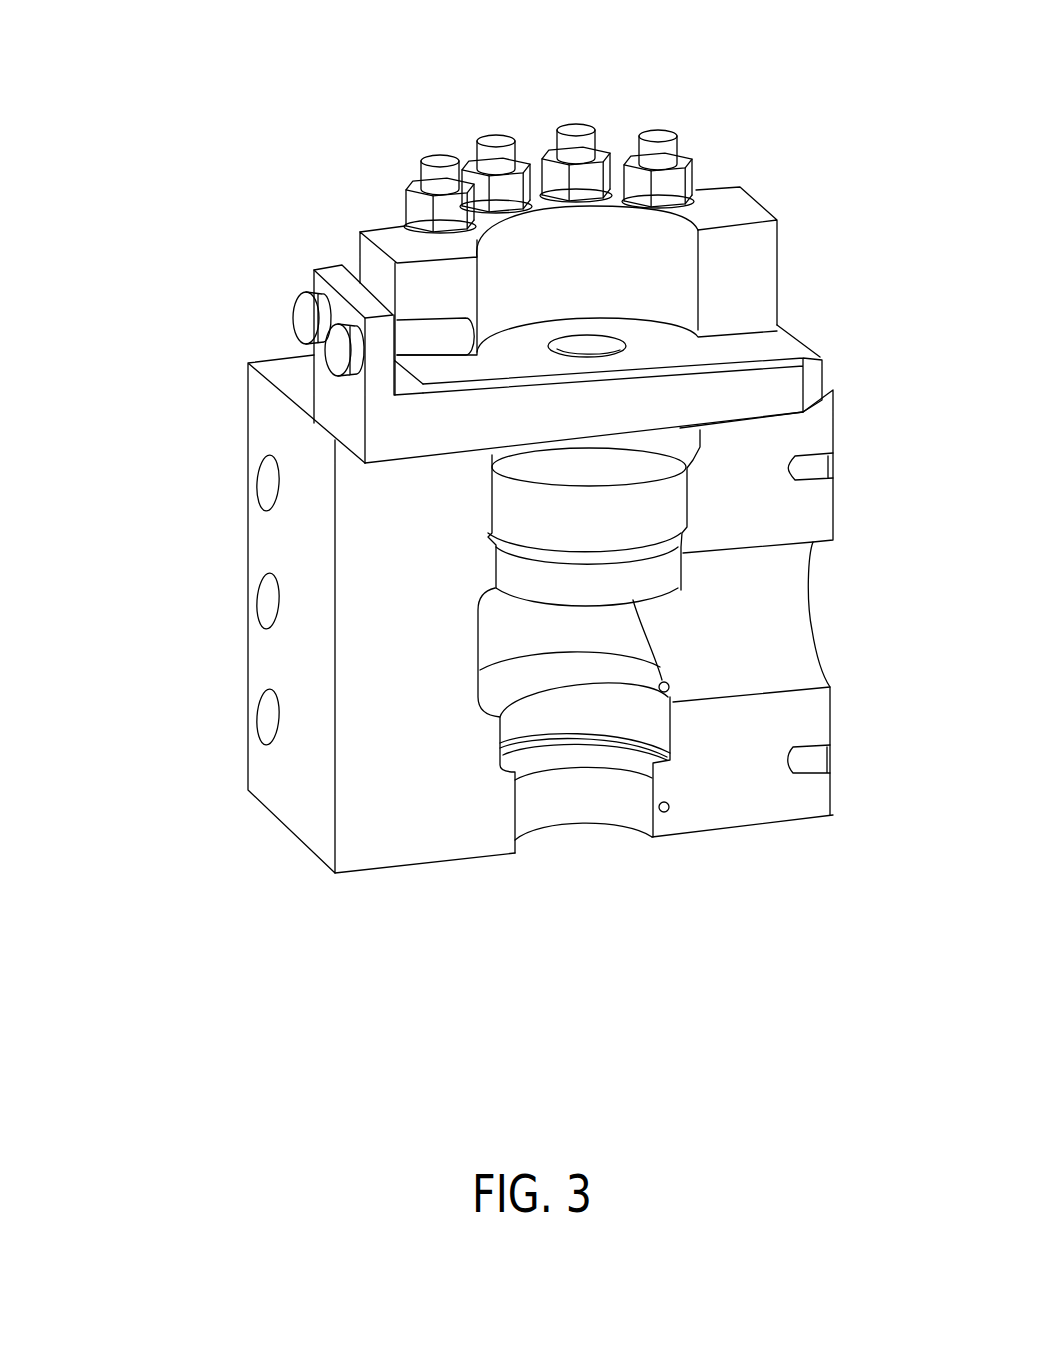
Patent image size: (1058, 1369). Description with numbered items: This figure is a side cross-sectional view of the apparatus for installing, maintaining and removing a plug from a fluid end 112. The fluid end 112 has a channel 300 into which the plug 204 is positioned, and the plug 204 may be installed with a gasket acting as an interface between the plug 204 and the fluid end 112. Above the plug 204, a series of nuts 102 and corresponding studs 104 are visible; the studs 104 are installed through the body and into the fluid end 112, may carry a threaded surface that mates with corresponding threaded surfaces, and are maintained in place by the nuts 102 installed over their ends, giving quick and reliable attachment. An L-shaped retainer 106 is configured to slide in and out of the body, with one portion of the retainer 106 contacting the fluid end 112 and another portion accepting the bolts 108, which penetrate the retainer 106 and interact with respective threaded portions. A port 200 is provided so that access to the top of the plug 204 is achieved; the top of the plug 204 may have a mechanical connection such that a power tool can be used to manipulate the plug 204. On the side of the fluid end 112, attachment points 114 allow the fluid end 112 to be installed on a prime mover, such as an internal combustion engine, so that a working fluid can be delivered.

The nut 102 is at (405, 190).
The stud 104 is at (490, 137).
The retainer 106 is at (322, 265).
The bolt 108 is at (293, 316).
The fluid end 112 is at (258, 538).
The attachment point 114 is at (257, 724).
The port 200 is at (590, 345).
The plug 204 is at (650, 497).
The channel 300 is at (580, 705).